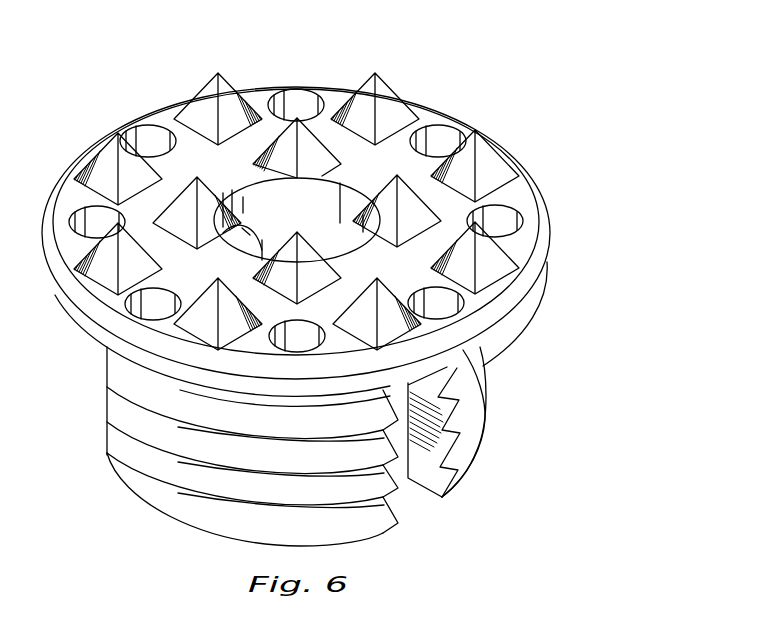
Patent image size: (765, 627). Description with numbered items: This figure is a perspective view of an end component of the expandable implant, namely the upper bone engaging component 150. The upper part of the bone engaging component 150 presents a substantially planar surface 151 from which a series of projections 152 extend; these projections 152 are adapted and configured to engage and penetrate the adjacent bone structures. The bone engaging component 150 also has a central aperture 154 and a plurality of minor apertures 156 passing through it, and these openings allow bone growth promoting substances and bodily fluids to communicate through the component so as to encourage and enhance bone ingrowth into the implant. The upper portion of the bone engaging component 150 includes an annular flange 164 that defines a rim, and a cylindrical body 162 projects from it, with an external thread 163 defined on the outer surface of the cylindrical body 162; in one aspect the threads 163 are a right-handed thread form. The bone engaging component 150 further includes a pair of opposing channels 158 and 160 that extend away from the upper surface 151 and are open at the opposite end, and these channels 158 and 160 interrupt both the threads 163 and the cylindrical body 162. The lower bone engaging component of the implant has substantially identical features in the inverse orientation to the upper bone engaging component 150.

The upper bone engaging component 150 is at (547, 203).
The substantially planar surface 151 is at (517, 245).
The projections 152 is at (216, 78).
The central aperture 154 is at (353, 206).
The minor apertures 156 is at (423, 300).
The channel 158 is at (442, 490).
The channel 160 is at (262, 250).
The cylindrical body 162 is at (140, 484).
The external thread 163 is at (407, 485).
The annular flange 164 is at (73, 323).